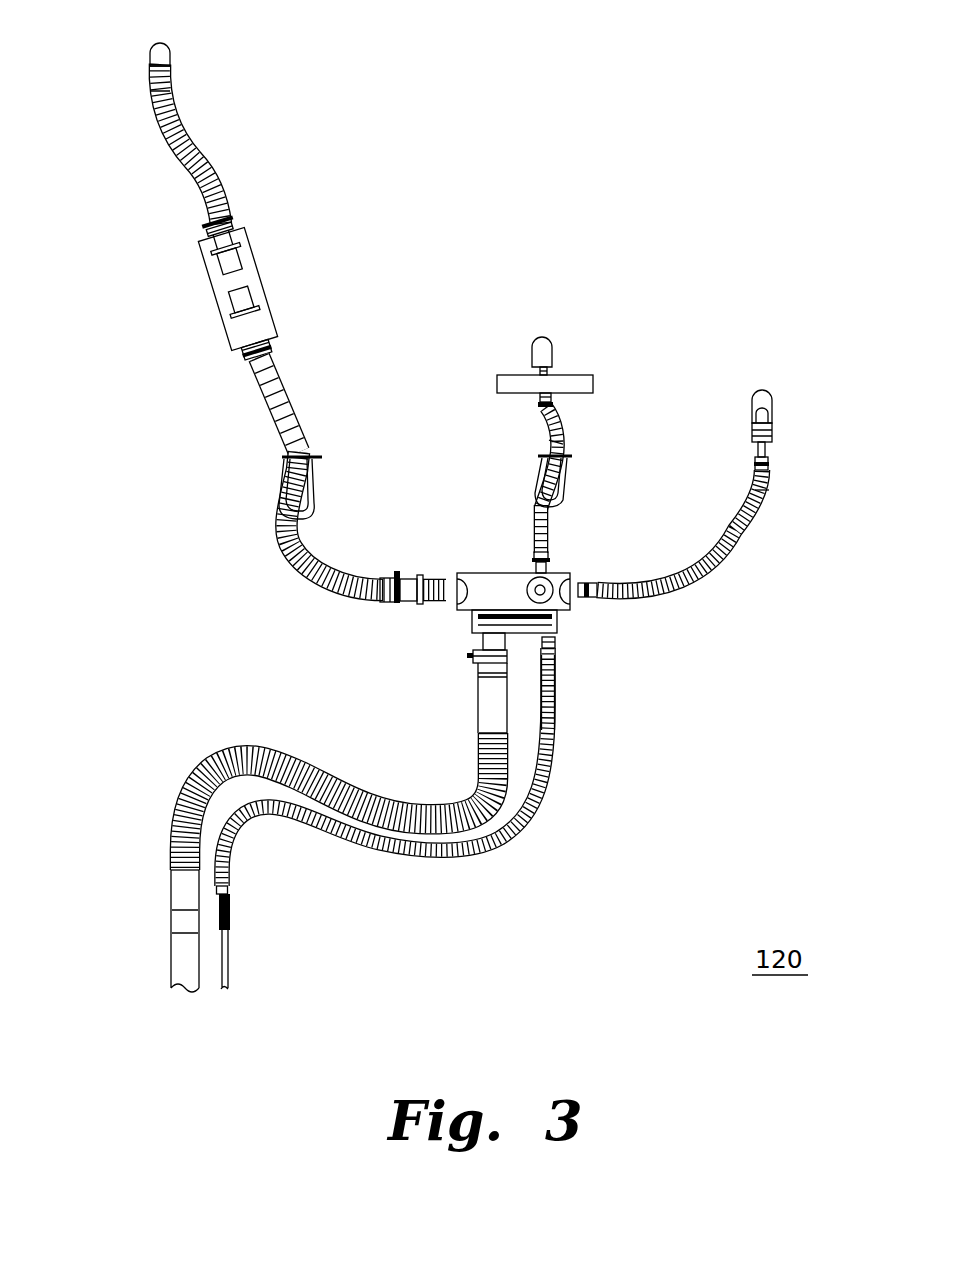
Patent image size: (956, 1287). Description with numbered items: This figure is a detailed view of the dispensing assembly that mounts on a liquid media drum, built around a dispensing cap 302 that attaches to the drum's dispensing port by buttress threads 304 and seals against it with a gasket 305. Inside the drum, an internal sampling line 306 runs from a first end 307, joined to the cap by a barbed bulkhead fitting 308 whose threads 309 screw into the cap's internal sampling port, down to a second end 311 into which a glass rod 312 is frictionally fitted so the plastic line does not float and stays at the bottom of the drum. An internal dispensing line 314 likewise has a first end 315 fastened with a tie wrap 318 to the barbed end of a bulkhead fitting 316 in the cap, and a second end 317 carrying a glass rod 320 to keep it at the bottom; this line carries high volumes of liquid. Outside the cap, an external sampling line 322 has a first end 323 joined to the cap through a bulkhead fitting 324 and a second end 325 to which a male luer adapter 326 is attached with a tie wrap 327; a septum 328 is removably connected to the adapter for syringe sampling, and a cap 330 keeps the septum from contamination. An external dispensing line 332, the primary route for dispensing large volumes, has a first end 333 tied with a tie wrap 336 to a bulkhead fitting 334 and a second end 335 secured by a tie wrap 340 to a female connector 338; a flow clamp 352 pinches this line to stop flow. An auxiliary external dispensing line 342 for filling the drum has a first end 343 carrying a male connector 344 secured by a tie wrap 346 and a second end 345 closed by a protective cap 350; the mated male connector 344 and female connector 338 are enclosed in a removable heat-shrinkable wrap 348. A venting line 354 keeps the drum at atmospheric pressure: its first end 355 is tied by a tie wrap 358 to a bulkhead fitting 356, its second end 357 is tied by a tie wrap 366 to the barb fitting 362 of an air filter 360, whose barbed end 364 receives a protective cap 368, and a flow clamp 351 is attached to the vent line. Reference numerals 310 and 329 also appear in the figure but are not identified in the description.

The dispensing cap 302 is at (573, 617).
The buttress threads 304 is at (557, 640).
The gasket 305 is at (471, 655).
The internal sampling line 306 is at (512, 828).
The first end 307 is at (550, 725).
The barbed bulkhead fitting 308 is at (549, 650).
The threads 309 is at (506, 640).
The inner hose upper portion 310 is at (551, 708).
The second end 311 is at (228, 872).
The glass rod 312 is at (228, 967).
The internal dispensing line 314 is at (230, 750).
The first end 315 is at (478, 700).
The bulkhead fitting 316 is at (478, 673).
The second end 317 is at (171, 843).
The tie wrap 318 is at (478, 692).
The glass rod 320 is at (175, 965).
The external sampling line 322 is at (740, 566).
The first end 323 is at (590, 593).
The bulkhead fitting 324 is at (588, 604).
The second end 325 is at (766, 497).
The male luer adapter 326 is at (768, 460).
The tie wrap 327 is at (755, 466).
The septum 328 is at (771, 432).
The hose coupling 329 is at (597, 582).
The cap 330 is at (770, 395).
The external dispensing line 332 is at (280, 558).
The first end 333 is at (370, 580).
The bulkhead fitting 334 is at (430, 578).
The second end 335 is at (262, 380).
The tie wrap 336 is at (396, 603).
The female connector 338 is at (255, 327).
The tie wrap 340 is at (278, 353).
The auxiliary external dispensing line 342 is at (192, 152).
The first end 343 is at (203, 211).
The male connector 344 is at (235, 272).
The second end 345 is at (152, 91).
The tie wrap 346 is at (234, 222).
The heat-shrinkable wrap 348 is at (215, 295).
The protective cap 350 is at (170, 60).
The flow clamp 351 is at (540, 463).
The flow clamp 352 is at (315, 470).
The venting line 354 is at (568, 432).
The first end 355 is at (545, 527).
The bulkhead fitting 356 is at (550, 560).
The second end 357 is at (550, 448).
The tie wrap 358 is at (533, 552).
The air filter 360 is at (497, 380).
The barb fitting 362 is at (560, 392).
The barbed end 364 is at (548, 368).
The tie wrap 366 is at (541, 408).
The protective cap 368 is at (553, 343).